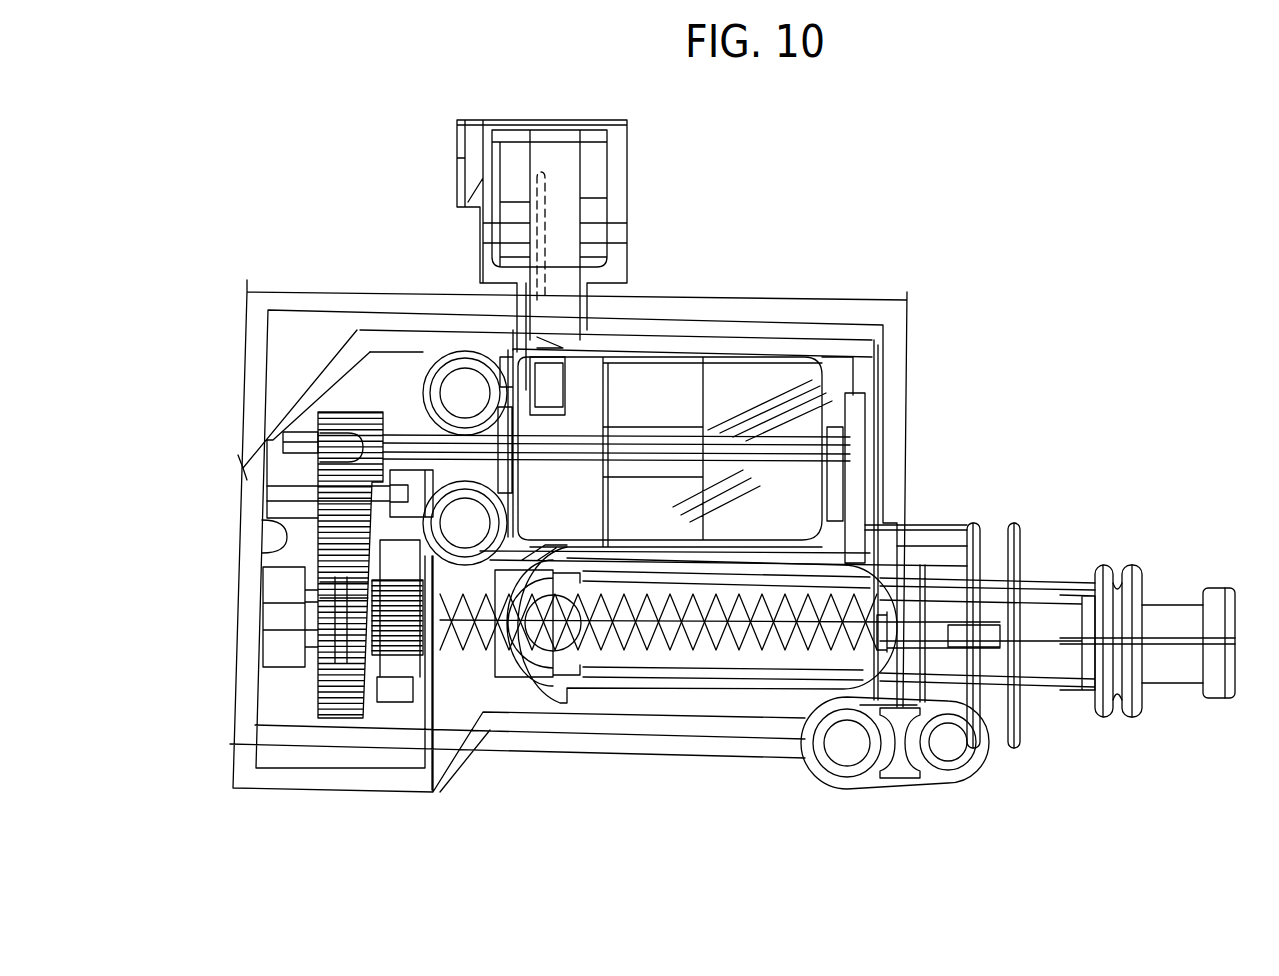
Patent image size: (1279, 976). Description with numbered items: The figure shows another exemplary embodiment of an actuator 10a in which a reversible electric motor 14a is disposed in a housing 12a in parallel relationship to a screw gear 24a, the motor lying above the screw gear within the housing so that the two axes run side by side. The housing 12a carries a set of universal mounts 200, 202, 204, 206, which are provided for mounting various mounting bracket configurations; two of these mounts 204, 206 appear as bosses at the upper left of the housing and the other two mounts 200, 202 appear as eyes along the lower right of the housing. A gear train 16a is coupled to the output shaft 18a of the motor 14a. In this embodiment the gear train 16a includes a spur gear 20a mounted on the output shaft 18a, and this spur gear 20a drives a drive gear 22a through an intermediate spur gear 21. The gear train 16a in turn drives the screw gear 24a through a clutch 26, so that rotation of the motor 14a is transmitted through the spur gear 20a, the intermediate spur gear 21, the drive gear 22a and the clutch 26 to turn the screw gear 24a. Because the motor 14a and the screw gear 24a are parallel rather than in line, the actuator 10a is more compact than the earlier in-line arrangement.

The actuator 10a is at (919, 240).
The housing 12a is at (907, 336).
The reversible electric motor 14a is at (722, 355).
The gear train 16a is at (262, 536).
The output shaft 18a is at (300, 440).
The spur gear 20a is at (318, 412).
The intermediate spur gear 21 is at (243, 468).
The drive gear 22a is at (325, 720).
The screw gear 24a is at (660, 652).
The clutch 26 is at (390, 702).
The universal mount 200 is at (845, 766).
The universal mount 202 is at (947, 768).
The universal mount 204 is at (450, 485).
The universal mount 206 is at (464, 351).